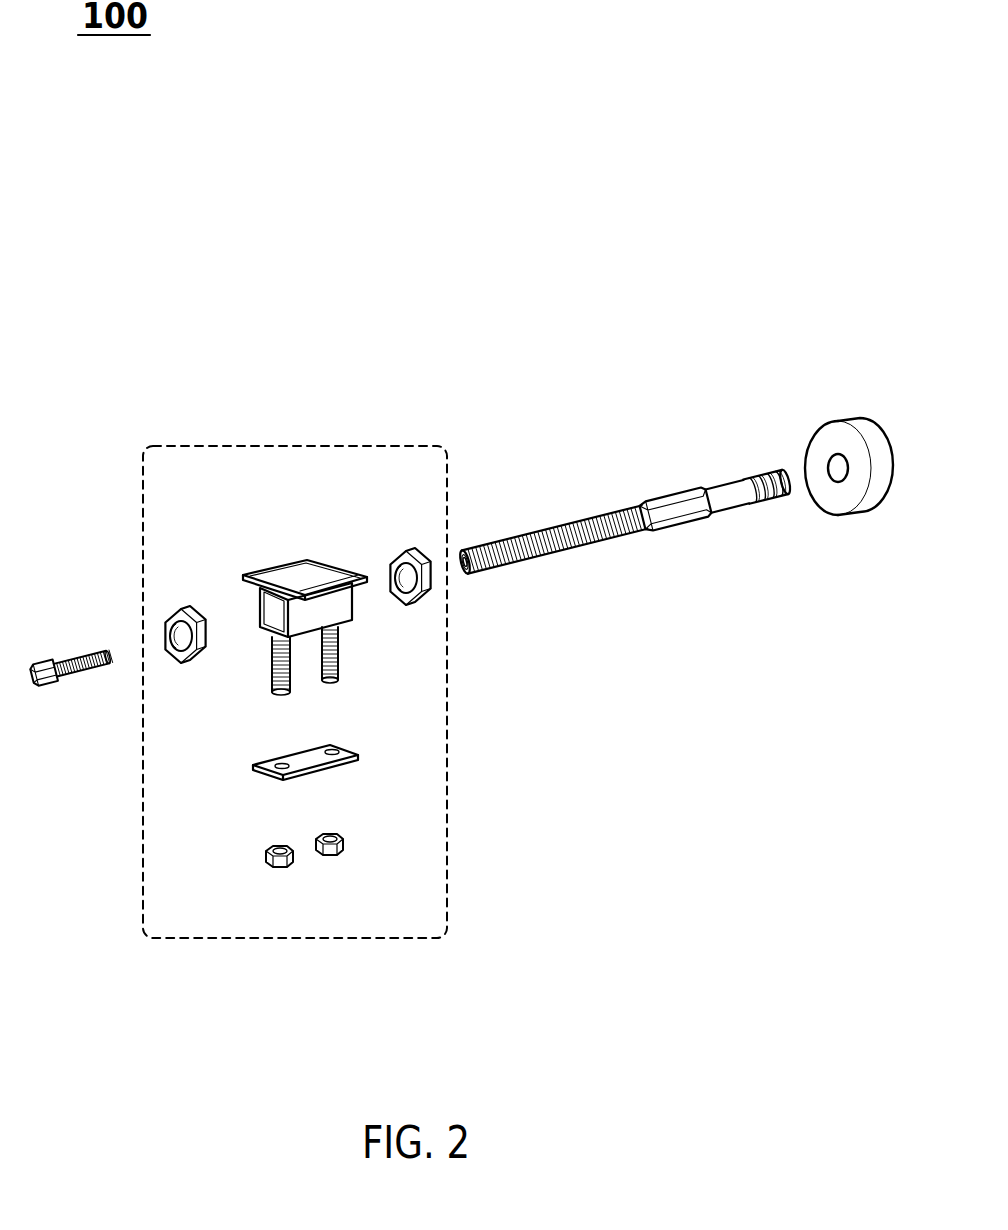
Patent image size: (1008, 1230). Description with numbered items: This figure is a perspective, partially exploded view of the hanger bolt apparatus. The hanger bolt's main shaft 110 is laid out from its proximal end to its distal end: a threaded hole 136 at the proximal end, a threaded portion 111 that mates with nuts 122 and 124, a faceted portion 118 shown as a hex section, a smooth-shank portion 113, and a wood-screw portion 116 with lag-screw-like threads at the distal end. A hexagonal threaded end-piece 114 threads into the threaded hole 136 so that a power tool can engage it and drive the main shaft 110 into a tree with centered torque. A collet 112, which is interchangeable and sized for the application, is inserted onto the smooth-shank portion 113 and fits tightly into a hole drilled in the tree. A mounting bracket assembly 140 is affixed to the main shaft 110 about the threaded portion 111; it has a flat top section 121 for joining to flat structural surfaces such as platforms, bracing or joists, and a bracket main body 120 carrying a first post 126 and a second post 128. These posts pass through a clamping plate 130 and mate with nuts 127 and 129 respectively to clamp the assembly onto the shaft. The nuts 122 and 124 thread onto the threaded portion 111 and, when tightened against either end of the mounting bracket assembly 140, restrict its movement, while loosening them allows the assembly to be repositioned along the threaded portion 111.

The main shaft 110 is at (623, 500).
The threaded portion 111 is at (473, 578).
The collet 112 is at (848, 440).
The smooth-shank portion 113 is at (733, 497).
The hexagonal threaded end-piece 114 is at (62, 670).
The wood-screw portion 116 is at (758, 468).
The faceted portion 118 is at (663, 512).
The bracket main body 120 is at (314, 642).
The flat top section 121 is at (290, 580).
The nut 122 is at (415, 560).
The nut 124 is at (183, 652).
The first post 126 is at (273, 692).
The nut 127 is at (275, 867).
The second post 128 is at (348, 680).
The nut 129 is at (335, 855).
The clamping plate 130 is at (308, 758).
The threaded hole 136 is at (461, 578).
The mounting bracket assembly 140 is at (232, 446).